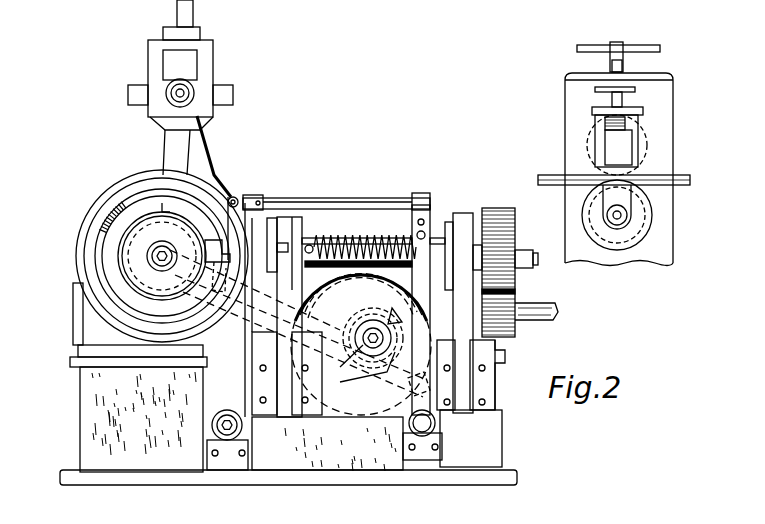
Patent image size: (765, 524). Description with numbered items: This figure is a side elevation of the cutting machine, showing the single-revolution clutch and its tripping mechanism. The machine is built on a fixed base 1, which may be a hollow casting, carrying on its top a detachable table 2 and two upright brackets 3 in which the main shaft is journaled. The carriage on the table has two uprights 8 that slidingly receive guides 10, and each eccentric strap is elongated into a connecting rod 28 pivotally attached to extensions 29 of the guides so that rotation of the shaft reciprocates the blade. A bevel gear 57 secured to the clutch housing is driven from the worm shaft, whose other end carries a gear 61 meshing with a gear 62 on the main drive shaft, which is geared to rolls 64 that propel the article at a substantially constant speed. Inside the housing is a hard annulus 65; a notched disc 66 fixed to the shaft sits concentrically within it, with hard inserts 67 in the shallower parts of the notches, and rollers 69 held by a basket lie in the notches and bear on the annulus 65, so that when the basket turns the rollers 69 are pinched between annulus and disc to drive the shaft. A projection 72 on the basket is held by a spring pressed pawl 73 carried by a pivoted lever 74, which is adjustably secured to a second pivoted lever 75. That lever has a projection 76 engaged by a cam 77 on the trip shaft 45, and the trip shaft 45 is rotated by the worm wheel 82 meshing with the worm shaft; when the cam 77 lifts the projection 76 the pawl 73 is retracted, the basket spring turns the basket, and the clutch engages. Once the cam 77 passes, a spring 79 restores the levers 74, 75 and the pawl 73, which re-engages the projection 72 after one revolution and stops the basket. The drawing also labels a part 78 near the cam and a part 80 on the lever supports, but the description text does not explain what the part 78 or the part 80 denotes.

The fixed base 1 is at (92, 413).
The table 2 is at (83, 305).
The upright brackets 3 is at (103, 323).
The uprights 8 is at (203, 57).
The guides 10 is at (206, 78).
The connecting rod 28 is at (210, 133).
The extensions 29 is at (192, 92).
The trip shaft 45 is at (364, 352).
The bevel gear 57 is at (113, 238).
The gear 61 is at (502, 226).
The gear 62 is at (504, 312).
The rolls 64 is at (582, 140).
The annulus 65 is at (150, 204).
The disc 66 is at (118, 250).
The inserts 67 is at (122, 266).
The rollers 69 is at (97, 227).
The projection 72 is at (205, 152).
The spring pressed pawl 73 is at (234, 196).
The pivoted lever 74 is at (272, 198).
The second pivoted lever 75 is at (422, 197).
The projection 76 is at (410, 318).
The cam 77 is at (360, 320).
The pulley rim 78 is at (330, 307).
The spring 79 is at (417, 236).
The lever 80 is at (290, 232).
The worm wheel 82 is at (307, 343).